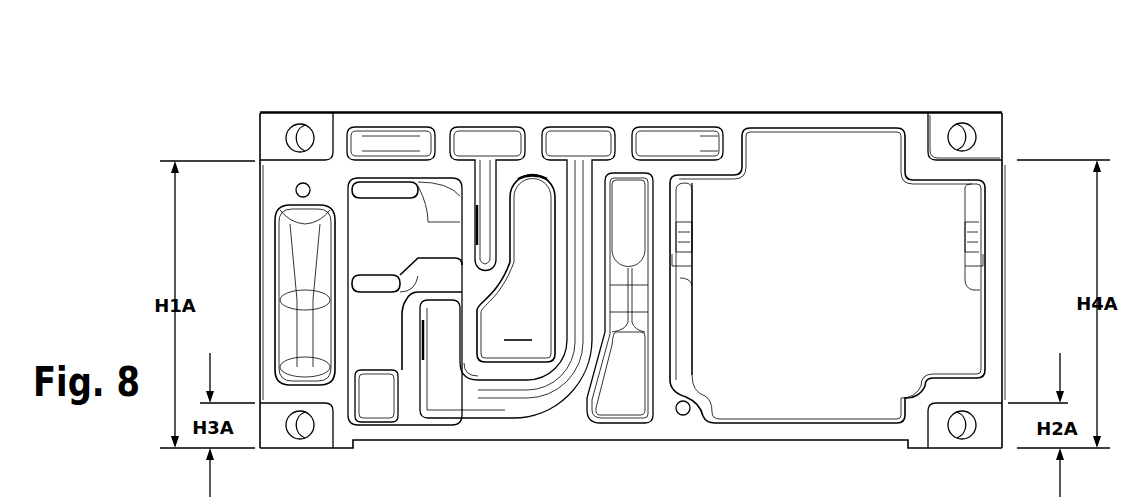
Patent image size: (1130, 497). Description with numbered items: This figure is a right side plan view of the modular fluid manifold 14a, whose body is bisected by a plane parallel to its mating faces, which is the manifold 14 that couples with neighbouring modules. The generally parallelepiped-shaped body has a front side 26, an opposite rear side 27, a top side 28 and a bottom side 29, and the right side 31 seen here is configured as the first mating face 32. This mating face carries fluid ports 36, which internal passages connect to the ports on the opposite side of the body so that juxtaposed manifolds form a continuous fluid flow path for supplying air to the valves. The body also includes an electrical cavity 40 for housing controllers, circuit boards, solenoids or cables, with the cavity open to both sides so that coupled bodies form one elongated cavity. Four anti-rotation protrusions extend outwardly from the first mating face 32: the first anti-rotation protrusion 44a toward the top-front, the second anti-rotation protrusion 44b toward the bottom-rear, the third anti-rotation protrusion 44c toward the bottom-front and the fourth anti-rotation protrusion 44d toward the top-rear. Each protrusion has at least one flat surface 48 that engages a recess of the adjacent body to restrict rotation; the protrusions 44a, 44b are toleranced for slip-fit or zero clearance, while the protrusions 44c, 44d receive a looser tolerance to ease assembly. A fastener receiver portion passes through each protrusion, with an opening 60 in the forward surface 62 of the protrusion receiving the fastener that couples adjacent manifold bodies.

The modular manifold 14 is at (189, 331).
The modular manifold 14a is at (224, 77).
The front side 26 is at (257, 130).
The rear side 27 is at (1003, 143).
The top side 28 is at (673, 113).
The bottom side 29 is at (593, 440).
The right side 31 is at (532, 125).
The first mating face 32 is at (438, 120).
The fluid ports 36 is at (440, 410).
The electrical cavity 40 is at (803, 300).
The first anti-rotation protrusion 44a is at (278, 115).
The second anti-rotation protrusion 44b is at (977, 439).
The third anti-rotation protrusion 44c is at (288, 437).
The fourth anti-rotation protrusion 44d is at (941, 115).
The flat surface 48 is at (297, 162).
The opening 60 is at (973, 132).
The forward surface 62 is at (963, 123).